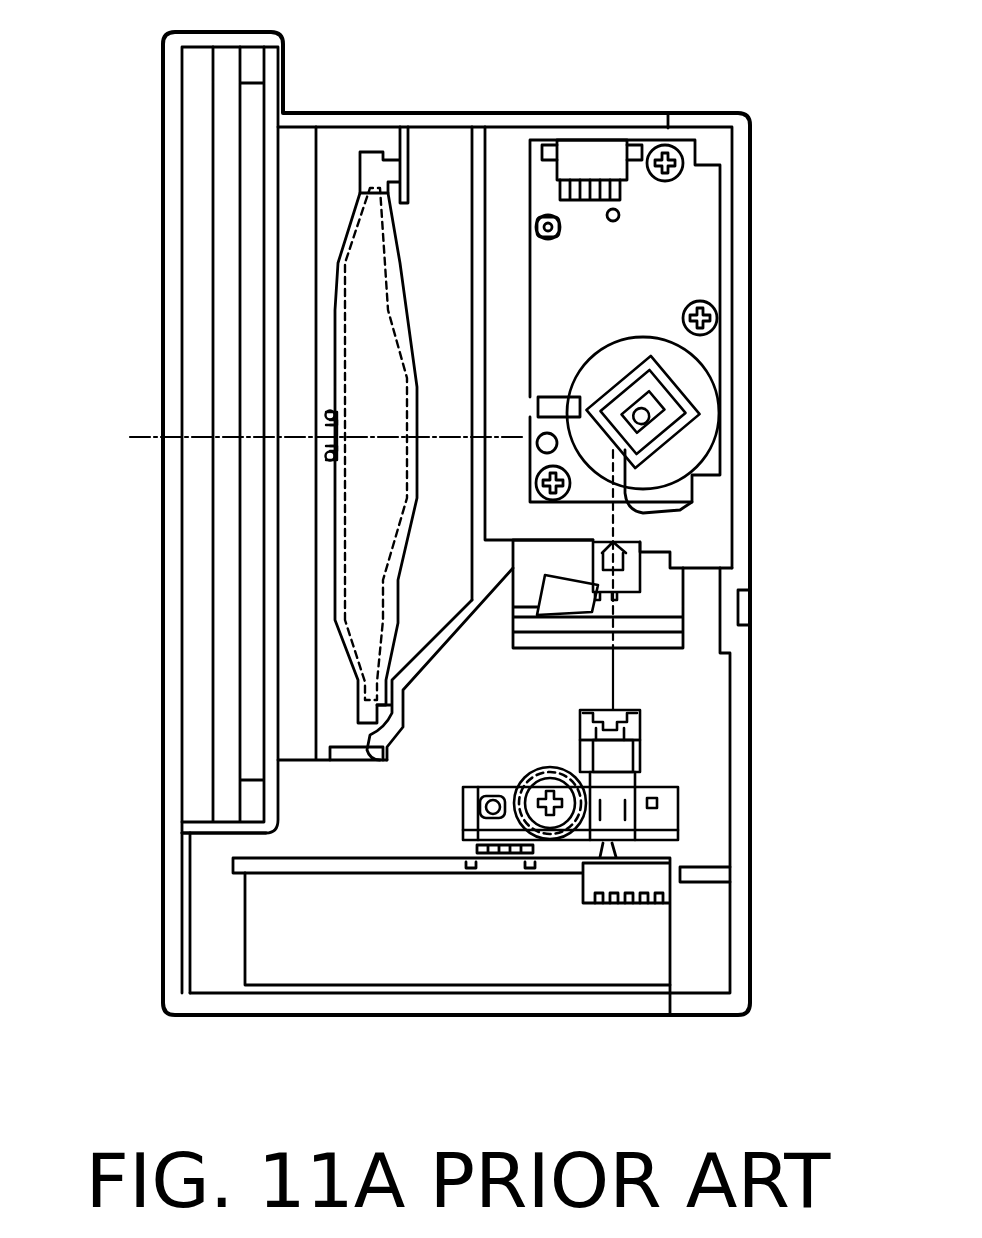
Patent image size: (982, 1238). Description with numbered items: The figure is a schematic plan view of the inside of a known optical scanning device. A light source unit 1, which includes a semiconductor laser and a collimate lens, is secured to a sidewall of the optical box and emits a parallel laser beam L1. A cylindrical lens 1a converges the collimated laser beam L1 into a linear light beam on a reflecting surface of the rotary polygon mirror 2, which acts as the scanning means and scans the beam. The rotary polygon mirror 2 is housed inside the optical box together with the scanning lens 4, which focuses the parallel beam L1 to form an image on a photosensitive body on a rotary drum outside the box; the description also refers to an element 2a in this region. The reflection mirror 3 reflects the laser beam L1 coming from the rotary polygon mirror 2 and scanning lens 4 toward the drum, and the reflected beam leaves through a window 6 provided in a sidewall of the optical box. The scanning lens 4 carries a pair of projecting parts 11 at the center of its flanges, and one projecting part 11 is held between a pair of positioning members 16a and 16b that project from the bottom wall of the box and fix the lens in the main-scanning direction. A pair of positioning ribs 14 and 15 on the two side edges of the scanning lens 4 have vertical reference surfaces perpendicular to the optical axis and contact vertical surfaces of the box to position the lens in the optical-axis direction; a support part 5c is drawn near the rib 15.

The light source unit 1 is at (648, 768).
The cylindrical lens 1a is at (620, 608).
The rotary polygon mirror 2 is at (653, 380).
The lens holder 2a is at (637, 513).
The reflection mirror 3 is at (220, 380).
The scanning lens 4 is at (355, 268).
The support base 5c is at (390, 748).
The window 6 is at (222, 818).
The projecting part 11 is at (325, 440).
The positioning rib 14 is at (397, 163).
The positioning rib 15 is at (366, 762).
The positioning member 16a is at (330, 411).
The positioning member 16b is at (330, 460).
The laser beam L1 is at (613, 677).